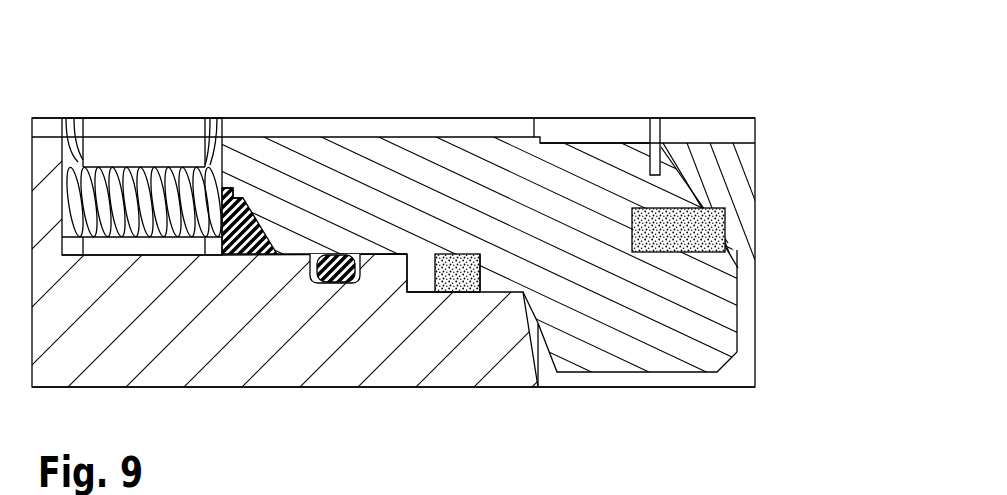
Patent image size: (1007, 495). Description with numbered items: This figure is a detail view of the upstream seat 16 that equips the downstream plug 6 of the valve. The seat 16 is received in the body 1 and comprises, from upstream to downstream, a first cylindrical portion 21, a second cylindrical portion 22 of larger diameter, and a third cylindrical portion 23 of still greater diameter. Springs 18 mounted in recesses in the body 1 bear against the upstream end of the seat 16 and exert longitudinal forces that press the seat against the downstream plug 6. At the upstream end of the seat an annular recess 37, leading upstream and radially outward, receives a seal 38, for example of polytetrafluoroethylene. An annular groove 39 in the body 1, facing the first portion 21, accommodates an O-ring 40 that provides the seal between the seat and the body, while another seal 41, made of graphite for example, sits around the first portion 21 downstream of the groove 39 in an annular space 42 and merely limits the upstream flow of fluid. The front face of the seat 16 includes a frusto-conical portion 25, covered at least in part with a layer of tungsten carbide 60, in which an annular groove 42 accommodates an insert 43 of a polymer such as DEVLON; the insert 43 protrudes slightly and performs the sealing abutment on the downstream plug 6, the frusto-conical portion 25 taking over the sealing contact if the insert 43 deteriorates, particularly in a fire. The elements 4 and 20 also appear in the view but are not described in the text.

The body 1 is at (215, 373).
The cover 4 is at (326, 140).
The downstream plug 6 is at (732, 178).
The upstream seat 16 is at (568, 160).
The springs 18 is at (147, 167).
The bottom plate 20 is at (653, 380).
The first cylindrical portion 21 is at (393, 197).
The second cylindrical portion 22 is at (497, 235).
The third cylindrical portion 23 is at (597, 310).
The frusto-conical portion 25 is at (620, 190).
The annular recess 37 is at (257, 222).
The seal 38 is at (230, 190).
The annular groove 39 is at (362, 272).
The O-ring 40 is at (360, 272).
The seal 41 is at (458, 290).
The annular groove 42 is at (662, 252).
The insert 43 is at (685, 232).
The layer of tungsten carbide 60 is at (662, 190).